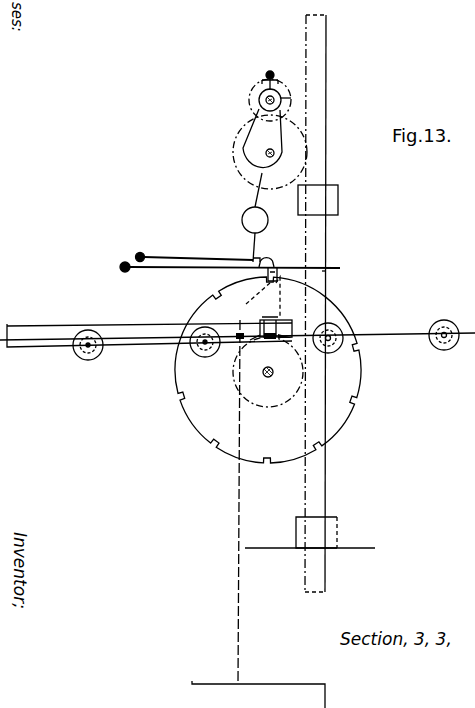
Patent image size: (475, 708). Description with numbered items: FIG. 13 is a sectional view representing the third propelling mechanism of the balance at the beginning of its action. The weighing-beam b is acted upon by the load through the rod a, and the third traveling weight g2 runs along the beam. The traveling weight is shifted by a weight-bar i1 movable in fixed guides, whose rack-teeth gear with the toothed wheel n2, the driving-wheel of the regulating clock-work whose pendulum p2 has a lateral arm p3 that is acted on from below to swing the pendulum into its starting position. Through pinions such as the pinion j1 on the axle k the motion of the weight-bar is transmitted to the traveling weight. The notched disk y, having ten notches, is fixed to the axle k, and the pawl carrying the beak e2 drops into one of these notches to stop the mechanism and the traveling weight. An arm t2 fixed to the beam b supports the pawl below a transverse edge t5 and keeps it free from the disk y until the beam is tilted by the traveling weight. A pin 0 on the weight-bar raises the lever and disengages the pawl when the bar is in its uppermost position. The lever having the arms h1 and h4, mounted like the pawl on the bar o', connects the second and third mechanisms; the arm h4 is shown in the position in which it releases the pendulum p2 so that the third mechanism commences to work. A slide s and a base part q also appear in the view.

The weight-bar i1 is at (310, 303).
The lateral arm p3 is at (258, 99).
The toothed wheel n2 is at (264, 134).
The pendulum p2 is at (248, 217).
The lever-arm h4 is at (195, 253).
The bar o' is at (123, 256).
The lever-arm h1 is at (234, 276).
The transverse edge t5 is at (269, 257).
The arm t2 is at (280, 292).
The pin 0 is at (333, 275).
The beak e2 is at (251, 294).
The notched disk y is at (268, 370).
The axle k is at (263, 378).
The pinion j1 is at (268, 380).
The weighing-beam b is at (237, 340).
The traveling weight g2 is at (149, 327).
The slide block s is at (264, 328).
The rod a is at (244, 501).
The base bracket q is at (258, 694).